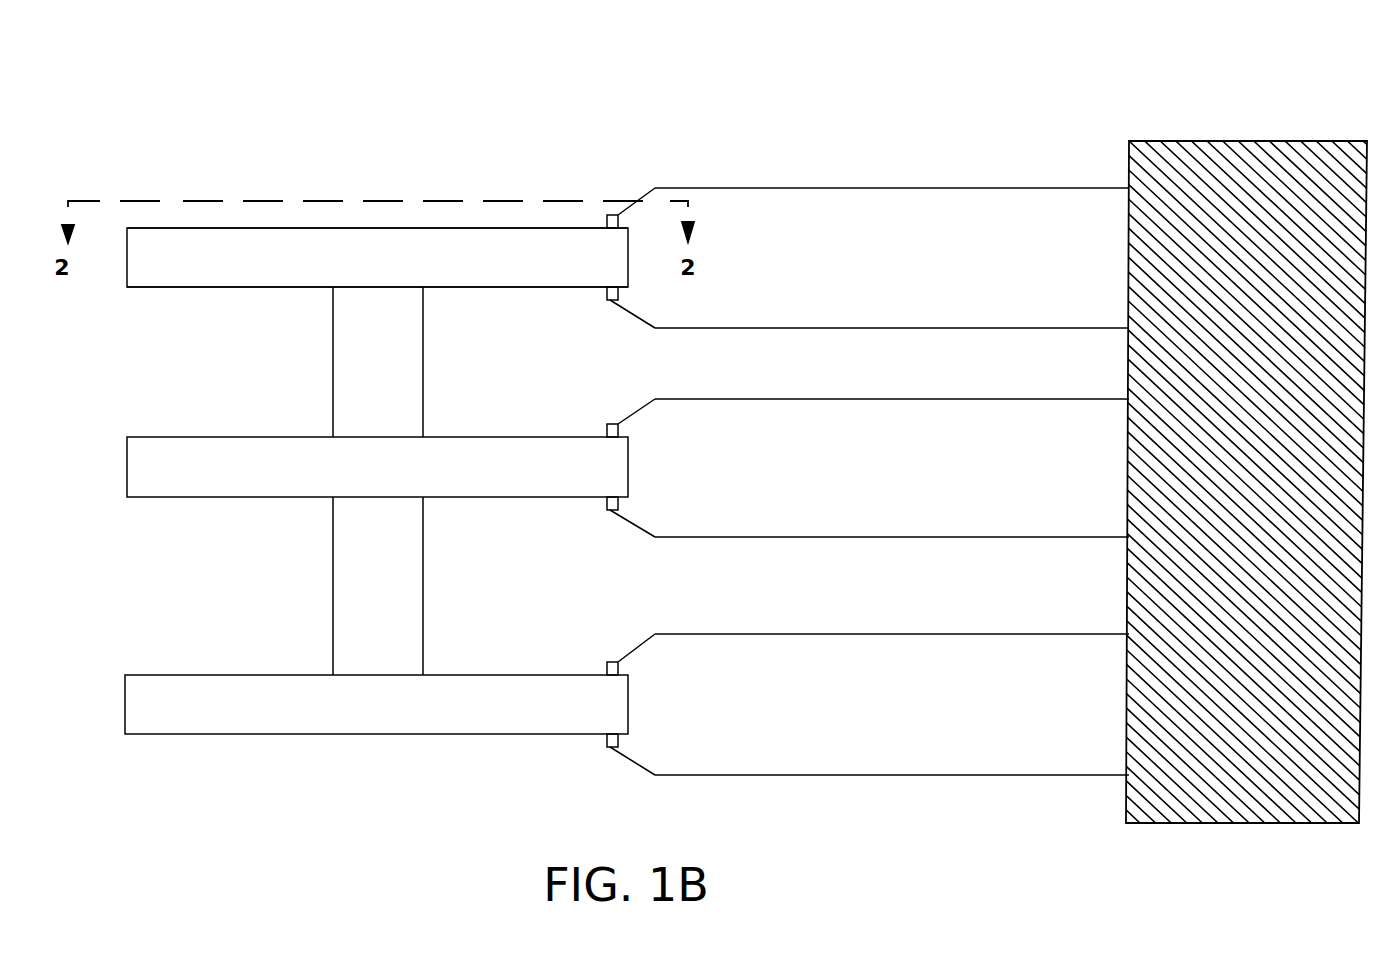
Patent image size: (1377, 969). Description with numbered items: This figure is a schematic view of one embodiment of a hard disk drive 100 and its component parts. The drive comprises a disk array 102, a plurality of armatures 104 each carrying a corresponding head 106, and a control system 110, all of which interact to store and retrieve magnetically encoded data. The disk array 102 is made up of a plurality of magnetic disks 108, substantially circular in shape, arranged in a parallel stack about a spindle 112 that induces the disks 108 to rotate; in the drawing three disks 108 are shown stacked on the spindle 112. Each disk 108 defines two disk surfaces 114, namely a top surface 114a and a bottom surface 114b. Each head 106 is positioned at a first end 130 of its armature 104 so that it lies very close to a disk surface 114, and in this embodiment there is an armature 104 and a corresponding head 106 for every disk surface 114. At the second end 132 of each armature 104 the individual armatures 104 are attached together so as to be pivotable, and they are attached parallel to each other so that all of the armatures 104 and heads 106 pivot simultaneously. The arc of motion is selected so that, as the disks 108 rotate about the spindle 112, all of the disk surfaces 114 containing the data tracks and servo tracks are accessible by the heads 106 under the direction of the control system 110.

The hard disk drive 100 is at (364, 85).
The disk array 102 is at (267, 183).
The armature 104 is at (937, 327).
The head 106 is at (608, 216).
The magnetic disk 108 is at (165, 473).
The control system 110 is at (1257, 140).
The spindle 112 is at (330, 582).
The disk surface 114 is at (163, 742).
The top surface 114a is at (187, 227).
The bottom surface 114b is at (153, 288).
The first end 130 is at (648, 187).
The second end 132 is at (1103, 187).